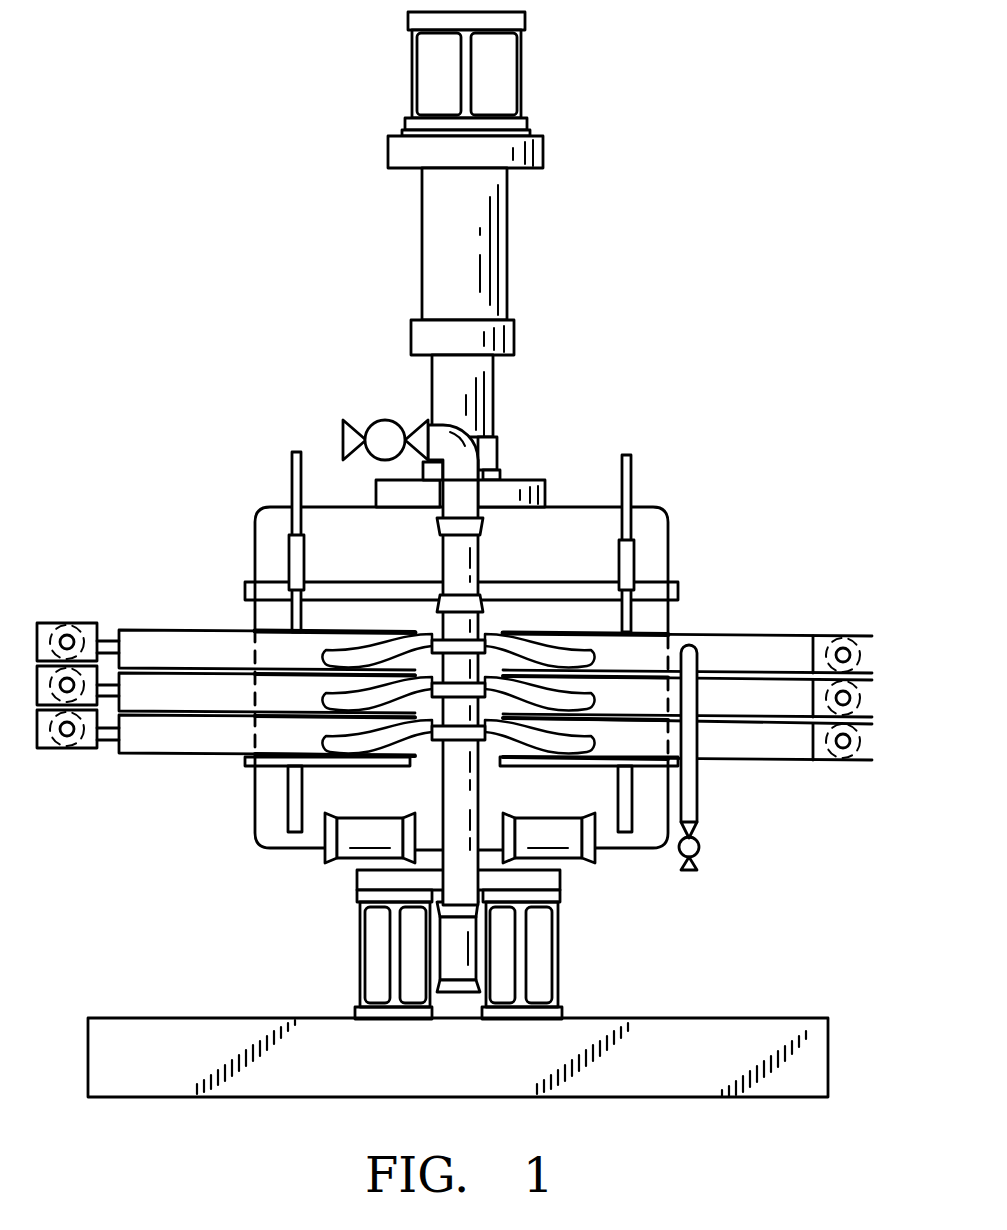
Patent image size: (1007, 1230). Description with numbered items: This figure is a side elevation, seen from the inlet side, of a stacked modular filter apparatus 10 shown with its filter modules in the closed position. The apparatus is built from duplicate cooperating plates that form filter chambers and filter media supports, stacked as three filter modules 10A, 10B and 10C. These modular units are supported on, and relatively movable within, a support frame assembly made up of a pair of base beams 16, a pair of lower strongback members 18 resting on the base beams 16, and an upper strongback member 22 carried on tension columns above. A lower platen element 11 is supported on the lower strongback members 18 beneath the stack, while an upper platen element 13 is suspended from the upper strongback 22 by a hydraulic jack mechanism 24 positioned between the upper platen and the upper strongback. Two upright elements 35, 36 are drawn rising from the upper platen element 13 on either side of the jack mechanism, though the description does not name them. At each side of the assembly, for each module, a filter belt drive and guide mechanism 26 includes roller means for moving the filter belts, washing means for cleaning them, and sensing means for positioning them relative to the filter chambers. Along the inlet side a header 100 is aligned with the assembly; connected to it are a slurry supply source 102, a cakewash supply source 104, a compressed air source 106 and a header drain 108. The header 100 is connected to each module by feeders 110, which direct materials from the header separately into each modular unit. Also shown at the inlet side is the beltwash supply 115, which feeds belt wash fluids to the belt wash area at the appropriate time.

The filter apparatus 10 is at (700, 412).
The filter module 10A is at (275, 652).
The filter module 10B is at (275, 692).
The filter module 10C is at (275, 735).
The lower platen element 11 is at (265, 822).
The upper platen element 13 is at (272, 543).
The base beams 16 is at (727, 1045).
The lower strongback members 18 is at (387, 962).
The upper strongback member 22 is at (523, 65).
The hydraulic jack mechanism 24 is at (493, 400).
The filter belt drive and guide mechanism 26 is at (879, 739).
The guide rod 35 is at (633, 472).
The guide rod 36 is at (291, 478).
The header 100 is at (462, 783).
The slurry supply source 102 is at (592, 862).
The cakewash supply source 104 is at (322, 858).
The compressed air source 106 is at (340, 440).
The header drain 108 is at (457, 970).
The feeders 110 is at (365, 642).
The beltwash supply 115 is at (698, 790).